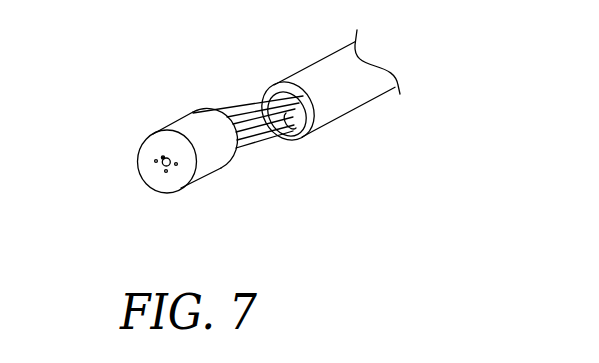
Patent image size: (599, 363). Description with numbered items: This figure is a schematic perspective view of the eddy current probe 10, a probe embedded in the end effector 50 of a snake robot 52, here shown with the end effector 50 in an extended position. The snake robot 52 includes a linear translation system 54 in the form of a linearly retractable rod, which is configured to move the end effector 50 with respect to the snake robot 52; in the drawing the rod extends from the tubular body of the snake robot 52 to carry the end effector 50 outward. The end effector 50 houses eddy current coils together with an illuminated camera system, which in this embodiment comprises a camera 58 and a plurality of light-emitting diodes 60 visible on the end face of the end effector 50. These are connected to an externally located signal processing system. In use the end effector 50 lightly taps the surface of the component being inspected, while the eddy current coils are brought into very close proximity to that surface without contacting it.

The probe 10 is at (101, 129).
The end effector 50 is at (189, 113).
The snake robot 52 is at (342, 105).
The linear translation system 54 is at (268, 139).
The camera 58 is at (154, 161).
The light-emitting diodes 60 is at (161, 153).